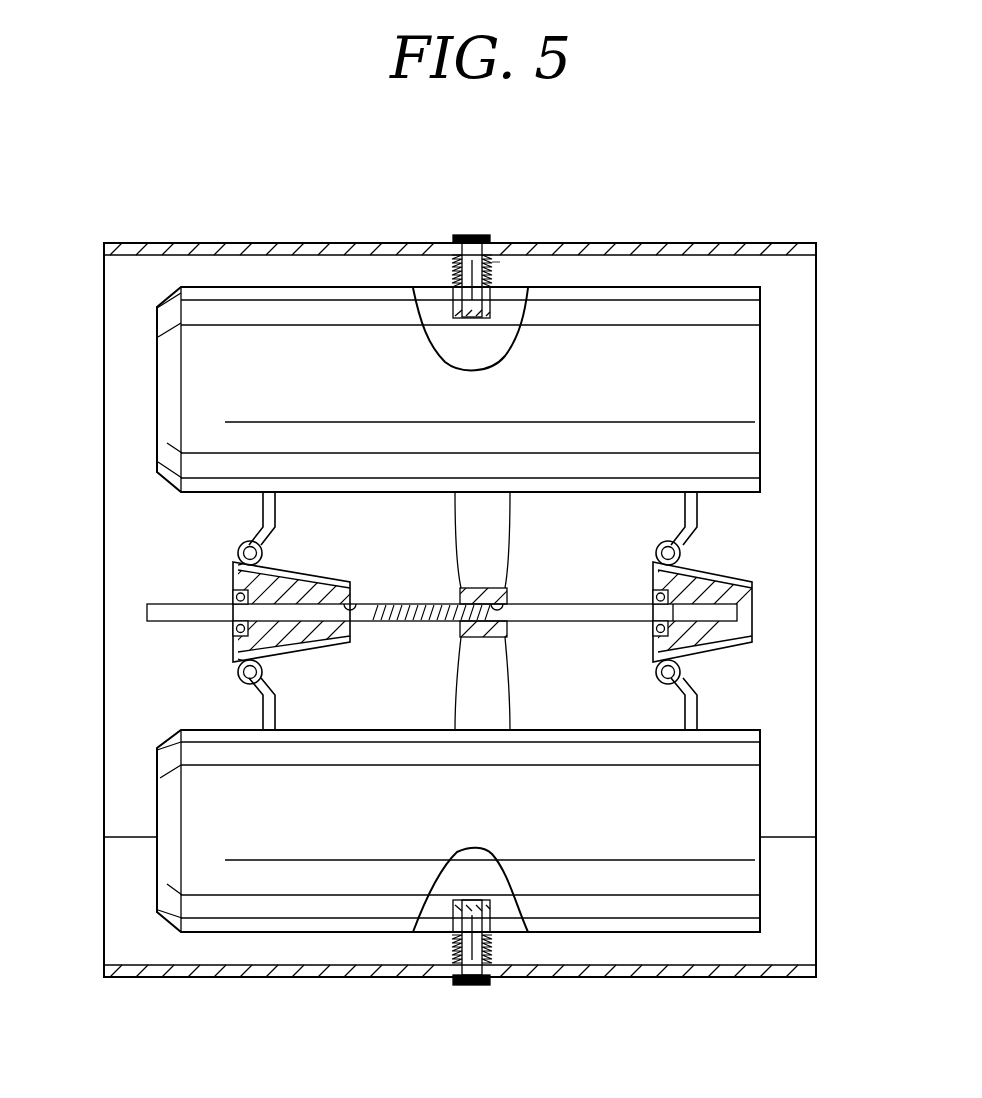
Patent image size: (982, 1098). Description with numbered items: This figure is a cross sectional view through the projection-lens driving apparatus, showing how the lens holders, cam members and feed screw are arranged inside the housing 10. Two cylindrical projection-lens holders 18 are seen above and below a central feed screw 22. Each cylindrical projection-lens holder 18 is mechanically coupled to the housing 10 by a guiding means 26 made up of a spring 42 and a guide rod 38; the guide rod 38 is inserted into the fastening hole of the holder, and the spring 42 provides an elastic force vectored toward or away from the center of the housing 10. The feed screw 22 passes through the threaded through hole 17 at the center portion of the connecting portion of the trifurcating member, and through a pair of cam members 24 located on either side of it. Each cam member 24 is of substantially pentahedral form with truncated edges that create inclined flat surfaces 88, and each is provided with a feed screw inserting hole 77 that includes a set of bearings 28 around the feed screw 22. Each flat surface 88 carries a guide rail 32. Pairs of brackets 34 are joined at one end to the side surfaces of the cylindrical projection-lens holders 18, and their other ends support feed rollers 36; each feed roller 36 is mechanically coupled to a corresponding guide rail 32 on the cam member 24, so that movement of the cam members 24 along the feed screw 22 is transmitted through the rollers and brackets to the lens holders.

The housing 10 is at (272, 250).
The cylindrical projection-lens holder 18 is at (672, 297).
The guide rod 38 is at (472, 240).
The spring 42 is at (452, 253).
The guiding means 26 is at (498, 269).
The feed screw 22 is at (583, 613).
The threaded through hole 17 is at (512, 602).
The cam member 24 is at (250, 583).
The feed screw inserting hole 77 is at (362, 600).
The bearings 28 is at (233, 632).
The bracket 34 is at (268, 508).
The feed roller 36 is at (238, 549).
The flat surface 88 is at (235, 568).
The guide rail 32 is at (747, 577).